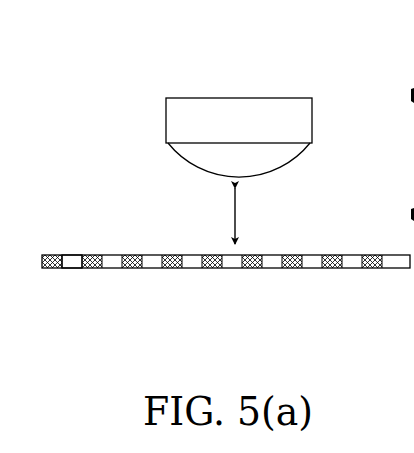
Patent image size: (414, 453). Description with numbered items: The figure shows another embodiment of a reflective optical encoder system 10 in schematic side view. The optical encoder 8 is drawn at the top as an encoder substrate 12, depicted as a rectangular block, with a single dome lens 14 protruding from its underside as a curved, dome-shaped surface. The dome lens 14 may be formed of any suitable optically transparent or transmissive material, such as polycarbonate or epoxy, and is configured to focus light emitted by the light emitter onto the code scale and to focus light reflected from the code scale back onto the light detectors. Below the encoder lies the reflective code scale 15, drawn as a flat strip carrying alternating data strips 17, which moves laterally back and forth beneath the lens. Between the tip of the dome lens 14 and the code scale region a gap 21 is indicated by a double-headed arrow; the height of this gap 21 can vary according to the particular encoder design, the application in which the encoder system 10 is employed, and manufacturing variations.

The reflective optical encoder system 10 is at (92, 80).
The optical encoder 8 is at (146, 122).
The encoder substrate 12 is at (300, 111).
The dome lens 14 is at (280, 157).
The gap 21 is at (237, 214).
The reflective code scale 15 is at (153, 274).
The data strips 17 is at (75, 255).